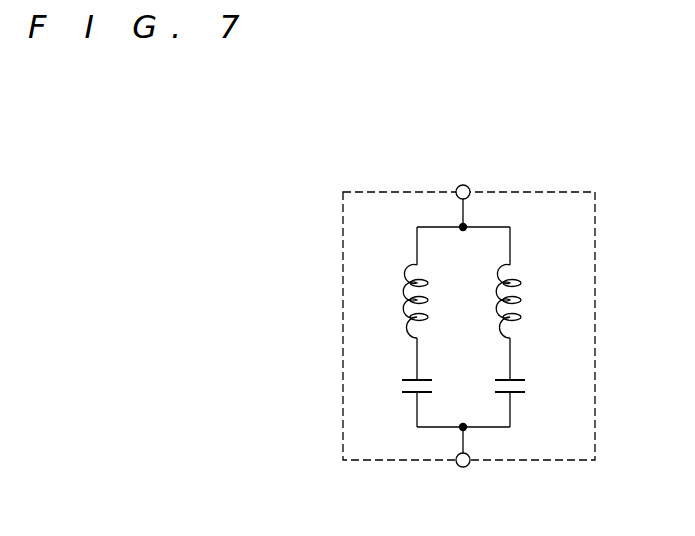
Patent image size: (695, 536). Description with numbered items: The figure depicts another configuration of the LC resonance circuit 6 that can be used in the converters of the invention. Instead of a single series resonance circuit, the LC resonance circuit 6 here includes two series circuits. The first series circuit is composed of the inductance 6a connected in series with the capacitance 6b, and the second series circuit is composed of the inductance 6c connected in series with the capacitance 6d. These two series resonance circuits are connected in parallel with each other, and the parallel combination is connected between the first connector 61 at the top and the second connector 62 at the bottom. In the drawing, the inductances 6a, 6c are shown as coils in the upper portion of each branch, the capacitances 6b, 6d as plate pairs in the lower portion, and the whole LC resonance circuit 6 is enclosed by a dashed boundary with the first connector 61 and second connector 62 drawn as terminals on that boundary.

The LC resonance circuit 6 is at (596, 326).
The inductance 6a is at (428, 300).
The capacitance 6b is at (430, 384).
The inductance 6c is at (521, 300).
The capacitance 6d is at (524, 384).
The first connector 61 is at (469, 186).
The second connector 62 is at (468, 466).